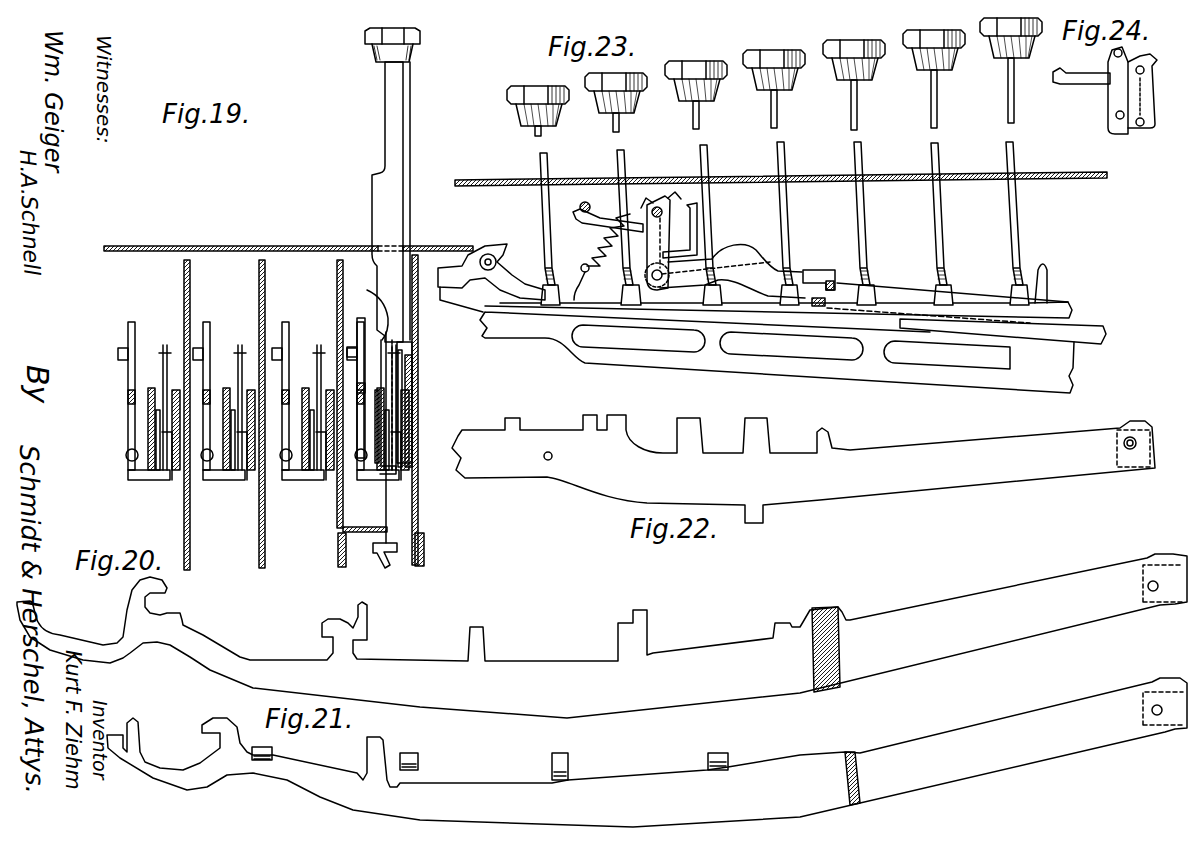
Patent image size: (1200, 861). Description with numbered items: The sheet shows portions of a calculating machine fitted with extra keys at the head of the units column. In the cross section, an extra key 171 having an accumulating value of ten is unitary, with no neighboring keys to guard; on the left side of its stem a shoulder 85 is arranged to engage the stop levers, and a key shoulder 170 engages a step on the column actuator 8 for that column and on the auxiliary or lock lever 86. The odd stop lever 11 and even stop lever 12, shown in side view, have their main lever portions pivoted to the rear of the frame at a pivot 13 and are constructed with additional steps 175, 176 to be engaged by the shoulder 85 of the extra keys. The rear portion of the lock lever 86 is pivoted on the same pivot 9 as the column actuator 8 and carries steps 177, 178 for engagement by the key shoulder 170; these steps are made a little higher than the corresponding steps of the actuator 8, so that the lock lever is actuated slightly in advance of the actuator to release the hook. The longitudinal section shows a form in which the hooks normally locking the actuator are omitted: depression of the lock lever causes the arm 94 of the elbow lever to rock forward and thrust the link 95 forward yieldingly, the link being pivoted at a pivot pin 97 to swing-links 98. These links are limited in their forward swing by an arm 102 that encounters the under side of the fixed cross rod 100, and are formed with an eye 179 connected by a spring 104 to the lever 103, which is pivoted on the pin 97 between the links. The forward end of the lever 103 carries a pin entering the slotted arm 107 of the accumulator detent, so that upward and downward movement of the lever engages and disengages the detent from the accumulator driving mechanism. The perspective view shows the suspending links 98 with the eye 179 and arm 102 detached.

In FIG. 19, the extra key 171 is at (408, 185).
In FIG. 19, the arm of the elbow lever 94 is at (289, 333).
In FIG. 19, the shoulder 85 is at (367, 368).
In FIG. 19, the key shoulder 170 is at (408, 346).
In FIG. 19, the column actuator 8 is at (410, 400).
In FIG. 23, the column actuator 8 is at (580, 358).
In FIG. 19, the auxiliary or lock lever 86 is at (402, 423).
In FIG. 22, the auxiliary or lock lever 86 is at (578, 466).
In FIG. 19, the link 95 is at (362, 396).
In FIG. 23, the link 95 is at (1030, 320).
In FIG. 19, the even stop lever 12 is at (385, 450).
In FIG. 21, the even stop lever 12 is at (487, 790).
In FIG. 19, the odd stop lever 11 is at (393, 448).
In FIG. 20, the odd stop lever 11 is at (530, 668).
In FIG. 23, the fixed cross rod 100 is at (585, 201).
In FIG. 23, the eye 179 is at (651, 200).
In FIG. 24, the eye 179 is at (1112, 57).
In FIG. 23, the swinging links 98 is at (672, 238).
In FIG. 24, the swinging links 98 is at (1142, 85).
In FIG. 23, the arm of the links 102 is at (572, 216).
In FIG. 24, the arm of the links 102 is at (1085, 85).
In FIG. 23, the spring 104 is at (600, 251).
In FIG. 23, the lever 103 is at (510, 290).
In FIG. 23, the slotted arm of the accumulator detent 107 is at (447, 290).
In FIG. 23, the pivot pin 97 is at (864, 276).
In FIG. 22, the step of the lock lever 177 is at (700, 408).
In FIG. 22, the step of the lock lever 178 is at (760, 425).
In FIG. 22, the pivot 9 is at (1130, 449).
In FIG. 20, the step of the stop lever 176 is at (785, 622).
In FIG. 21, the step of the stop lever 175 is at (727, 740).
In FIG. 20, the pivot 13 is at (1150, 582).
In FIG. 21, the pivot 13 is at (1155, 706).